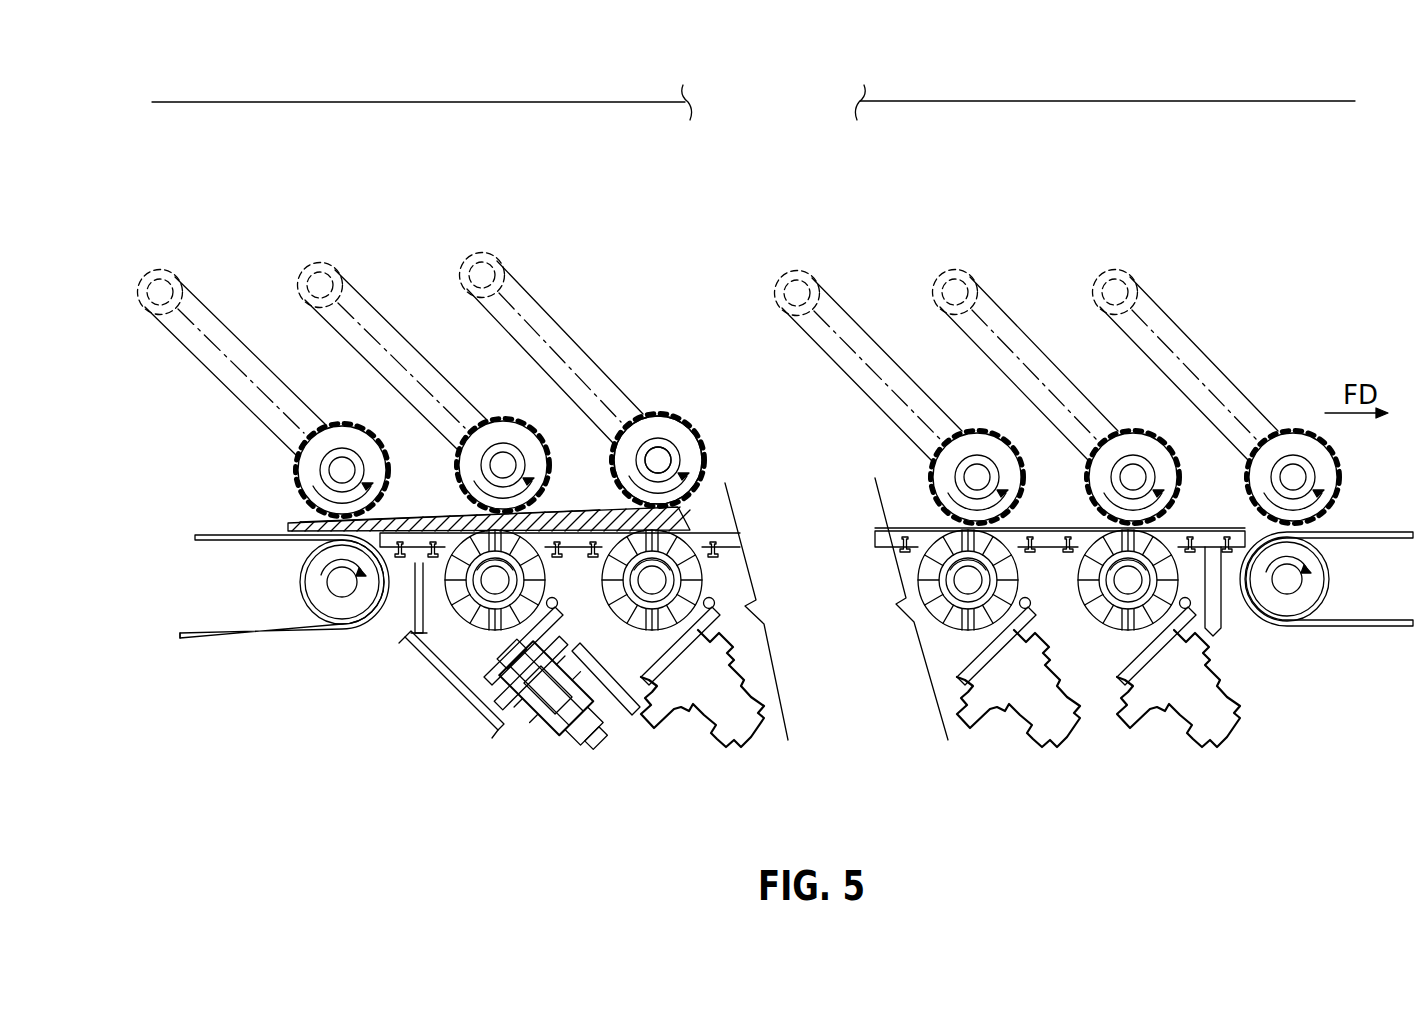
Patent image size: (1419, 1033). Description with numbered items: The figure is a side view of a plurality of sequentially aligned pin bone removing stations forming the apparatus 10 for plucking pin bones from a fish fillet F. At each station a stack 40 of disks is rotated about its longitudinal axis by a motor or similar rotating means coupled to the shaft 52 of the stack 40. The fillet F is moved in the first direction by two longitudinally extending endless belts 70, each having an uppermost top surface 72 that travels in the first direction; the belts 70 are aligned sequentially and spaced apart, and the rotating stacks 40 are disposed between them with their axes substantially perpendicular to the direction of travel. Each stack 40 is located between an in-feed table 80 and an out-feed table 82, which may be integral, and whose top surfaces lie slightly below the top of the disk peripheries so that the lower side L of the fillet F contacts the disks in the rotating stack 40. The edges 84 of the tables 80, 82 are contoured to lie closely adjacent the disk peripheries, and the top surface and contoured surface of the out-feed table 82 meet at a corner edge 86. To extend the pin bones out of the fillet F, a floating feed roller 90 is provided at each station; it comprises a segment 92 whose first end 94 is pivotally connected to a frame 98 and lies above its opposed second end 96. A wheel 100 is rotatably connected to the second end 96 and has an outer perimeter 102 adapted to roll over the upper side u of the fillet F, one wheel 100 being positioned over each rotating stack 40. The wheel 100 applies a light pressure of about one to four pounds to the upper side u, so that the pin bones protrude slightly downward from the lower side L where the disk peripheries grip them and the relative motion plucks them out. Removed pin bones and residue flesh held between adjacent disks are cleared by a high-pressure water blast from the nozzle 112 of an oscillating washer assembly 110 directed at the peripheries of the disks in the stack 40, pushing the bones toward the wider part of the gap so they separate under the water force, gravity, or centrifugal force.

The apparatus 10 is at (1012, 768).
The stack 40 is at (481, 623).
The shaft 52 is at (652, 578).
The endless belts 70 is at (210, 634).
The uppermost top surface 72 is at (216, 536).
The in-feed table 80 is at (735, 546).
The out-feed table 82 is at (890, 550).
The edges 84 is at (480, 620).
The corner edge 86 is at (373, 600).
The floating feed roller 90 is at (558, 316).
The segment 92 is at (608, 384).
The first end 94 is at (486, 274).
The second end 96 is at (662, 458).
The frame 98 is at (405, 102).
The wheel 100 is at (700, 444).
The outer perimeter 102 is at (704, 469).
The oscillating washer assembly 110 is at (596, 734).
The nozzle 112 is at (498, 734).
The fillet F is at (280, 533).
The upper side u is at (300, 526).
The lower side L is at (732, 501).